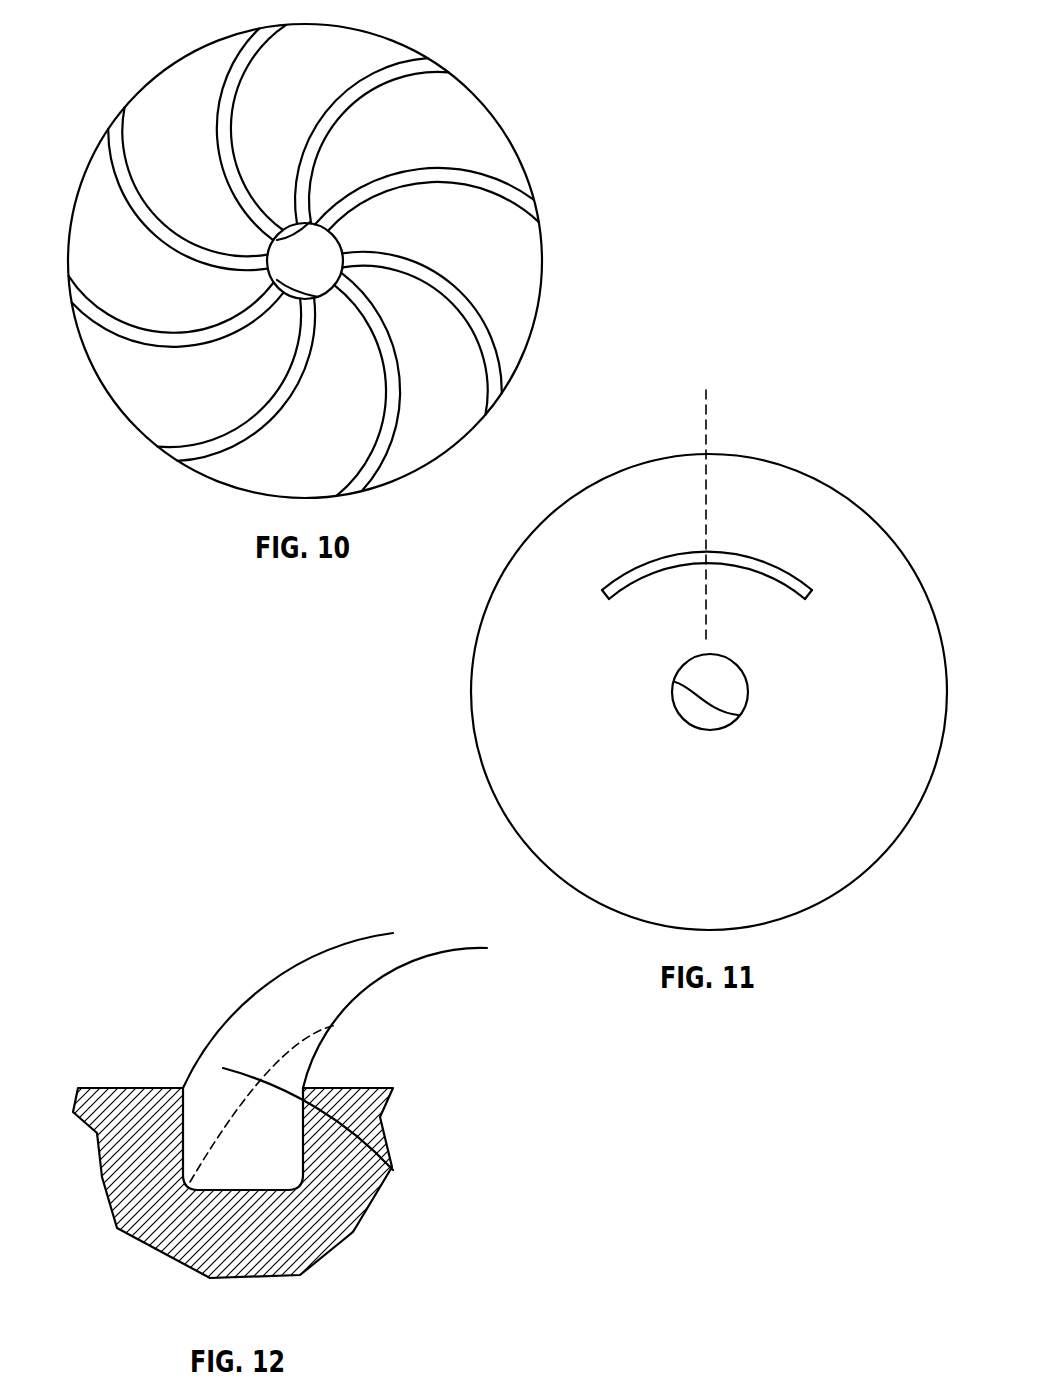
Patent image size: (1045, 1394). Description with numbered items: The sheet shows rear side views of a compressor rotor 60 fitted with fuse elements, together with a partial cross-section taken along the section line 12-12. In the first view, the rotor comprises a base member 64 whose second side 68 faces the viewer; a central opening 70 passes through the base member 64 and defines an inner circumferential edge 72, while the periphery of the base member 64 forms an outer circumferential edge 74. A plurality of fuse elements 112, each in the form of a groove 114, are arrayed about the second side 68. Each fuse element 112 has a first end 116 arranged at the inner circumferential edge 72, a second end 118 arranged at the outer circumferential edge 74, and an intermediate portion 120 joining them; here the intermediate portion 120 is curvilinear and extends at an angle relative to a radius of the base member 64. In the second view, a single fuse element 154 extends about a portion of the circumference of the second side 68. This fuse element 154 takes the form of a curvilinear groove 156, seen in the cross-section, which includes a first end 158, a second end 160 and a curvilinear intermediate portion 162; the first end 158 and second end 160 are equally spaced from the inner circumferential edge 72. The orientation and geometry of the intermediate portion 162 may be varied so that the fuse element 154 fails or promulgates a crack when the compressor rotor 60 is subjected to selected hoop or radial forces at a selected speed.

In FIG. 11, the section line 12- 12 is at (667, 517).
In FIG. 10, the compressor rotor 60 is at (313, 249).
In FIG. 11, the compressor rotor 60 is at (703, 668).
In FIG. 12, the compressor rotor 60 is at (269, 1077).
In FIG. 10, the base member 64 is at (322, 261).
In FIG. 11, the base member 64 is at (709, 688).
In FIG. 10, the second side 68 is at (286, 248).
In FIG. 11, the second side 68 is at (680, 635).
In FIG. 12, the second side 68 is at (233, 1125).
In FIG. 10, the central opening 70 is at (337, 289).
In FIG. 11, the central opening 70 is at (681, 710).
In FIG. 10, the inner circumferential edge 72 is at (315, 295).
In FIG. 11, the inner circumferential edge 72 is at (681, 687).
In FIG. 10, the outer circumferential edge 74 is at (174, 238).
In FIG. 11, the outer circumferential edge 74 is at (709, 691).
In FIG. 10, the fuse element 112 is at (235, 270).
In FIG. 10, the groove 114 is at (308, 241).
In FIG. 10, the first end 116 is at (371, 141).
In FIG. 10, the second end 118 is at (282, 120).
In FIG. 10, the intermediate portion 120 is at (276, 134).
In FIG. 11, the fuse element 154 is at (702, 532).
In FIG. 12, the fuse element 154 is at (335, 1038).
In FIG. 11, the curvilinear groove 156 is at (707, 506).
In FIG. 12, the curvilinear groove 156 is at (263, 1103).
In FIG. 11, the first end 158 is at (556, 540).
In FIG. 11, the second end 160 is at (853, 538).
In FIG. 11, the intermediate portion 162 is at (707, 498).
In FIG. 12, the intermediate portion 162 is at (354, 1133).